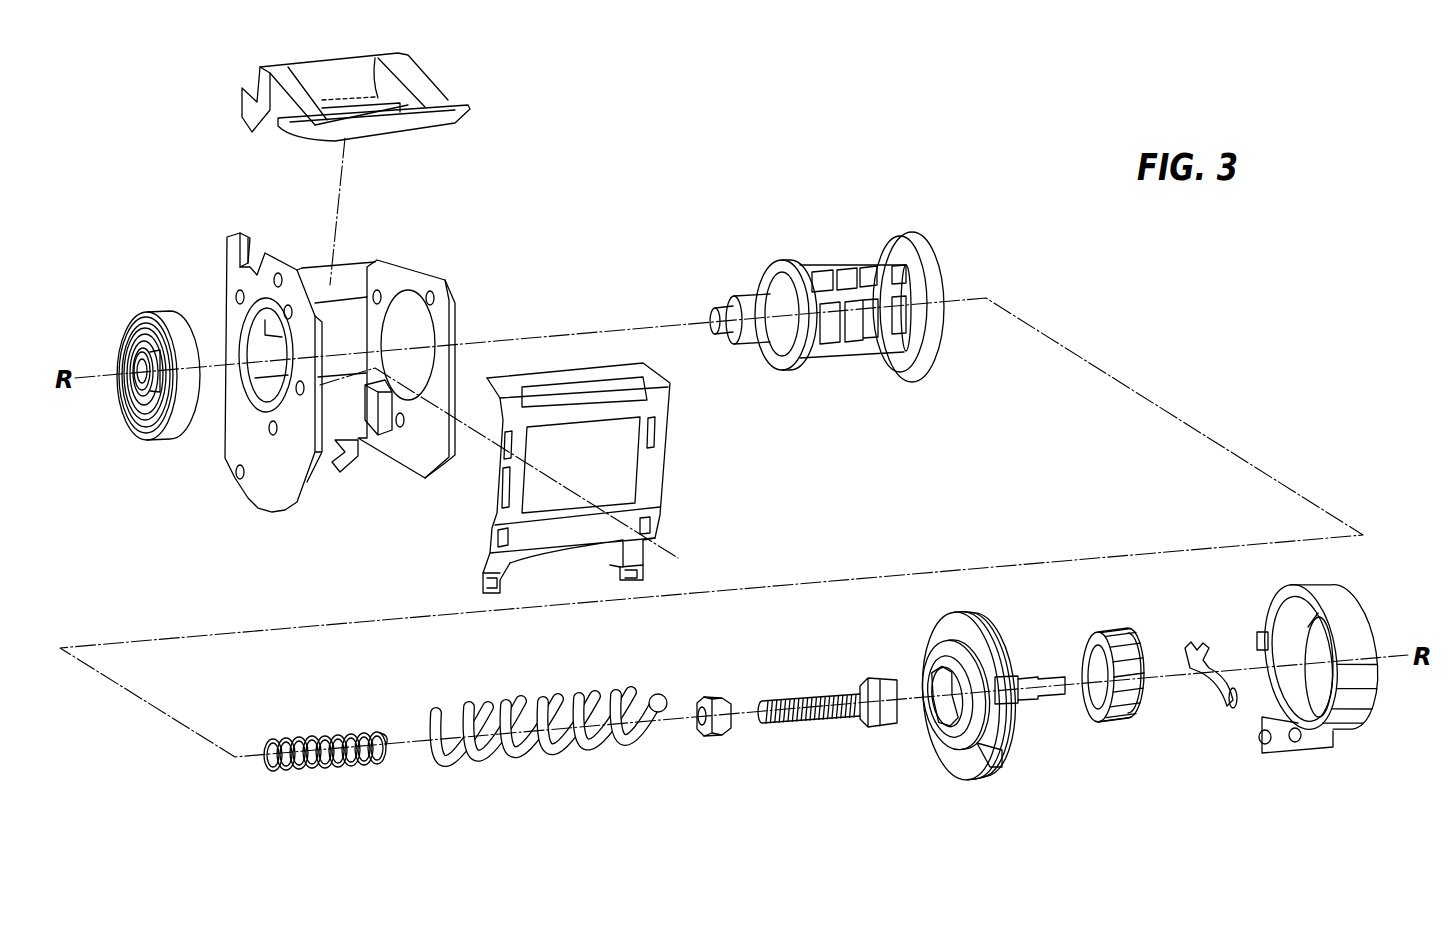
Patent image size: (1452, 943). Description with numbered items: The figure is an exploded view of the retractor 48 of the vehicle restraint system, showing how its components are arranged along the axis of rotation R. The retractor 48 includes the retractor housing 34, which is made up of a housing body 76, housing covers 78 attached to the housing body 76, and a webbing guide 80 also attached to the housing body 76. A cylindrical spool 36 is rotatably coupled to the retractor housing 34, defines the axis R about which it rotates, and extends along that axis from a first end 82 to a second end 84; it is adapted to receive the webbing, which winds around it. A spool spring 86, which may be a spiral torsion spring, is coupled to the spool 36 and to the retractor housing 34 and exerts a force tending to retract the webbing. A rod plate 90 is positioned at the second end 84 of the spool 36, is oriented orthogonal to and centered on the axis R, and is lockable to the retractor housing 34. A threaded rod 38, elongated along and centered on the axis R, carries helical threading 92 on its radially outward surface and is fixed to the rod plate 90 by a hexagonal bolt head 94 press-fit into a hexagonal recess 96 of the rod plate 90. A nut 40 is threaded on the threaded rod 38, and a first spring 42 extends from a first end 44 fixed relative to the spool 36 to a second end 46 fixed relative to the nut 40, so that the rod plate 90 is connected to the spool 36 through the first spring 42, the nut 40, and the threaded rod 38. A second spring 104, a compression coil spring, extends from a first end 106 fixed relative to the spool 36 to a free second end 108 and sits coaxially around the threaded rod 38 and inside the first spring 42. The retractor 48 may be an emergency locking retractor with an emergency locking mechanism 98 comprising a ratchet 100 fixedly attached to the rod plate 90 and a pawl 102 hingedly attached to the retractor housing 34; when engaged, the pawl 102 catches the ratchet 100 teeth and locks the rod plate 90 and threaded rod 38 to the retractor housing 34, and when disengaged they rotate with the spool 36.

The retractor 48 is at (128, 96).
The webbing guide 80 is at (443, 100).
The retractor housing 34 is at (377, 324).
The housing body 76 is at (405, 268).
The spool spring 86 is at (155, 445).
The housing covers 78 is at (673, 422).
The first end 82 is at (803, 265).
The spool 36 is at (842, 278).
The second end 84 is at (903, 268).
The second spring 104 is at (327, 750).
The first end 106 is at (272, 768).
The second end 108 is at (383, 745).
The first end 44 is at (441, 706).
The first spring 42 is at (539, 734).
The second end 46 is at (656, 694).
The nut 40 is at (716, 736).
The threaded rod 38 is at (827, 701).
The threading 92 is at (817, 720).
The hexagonal bolt head 94 is at (877, 677).
The rod plate 90 is at (972, 680).
The hexagonal recess 96 is at (940, 718).
The ratchet 100 is at (1115, 723).
The pawl 102 is at (1212, 703).
The emergency locking mechanism 98 is at (1186, 791).